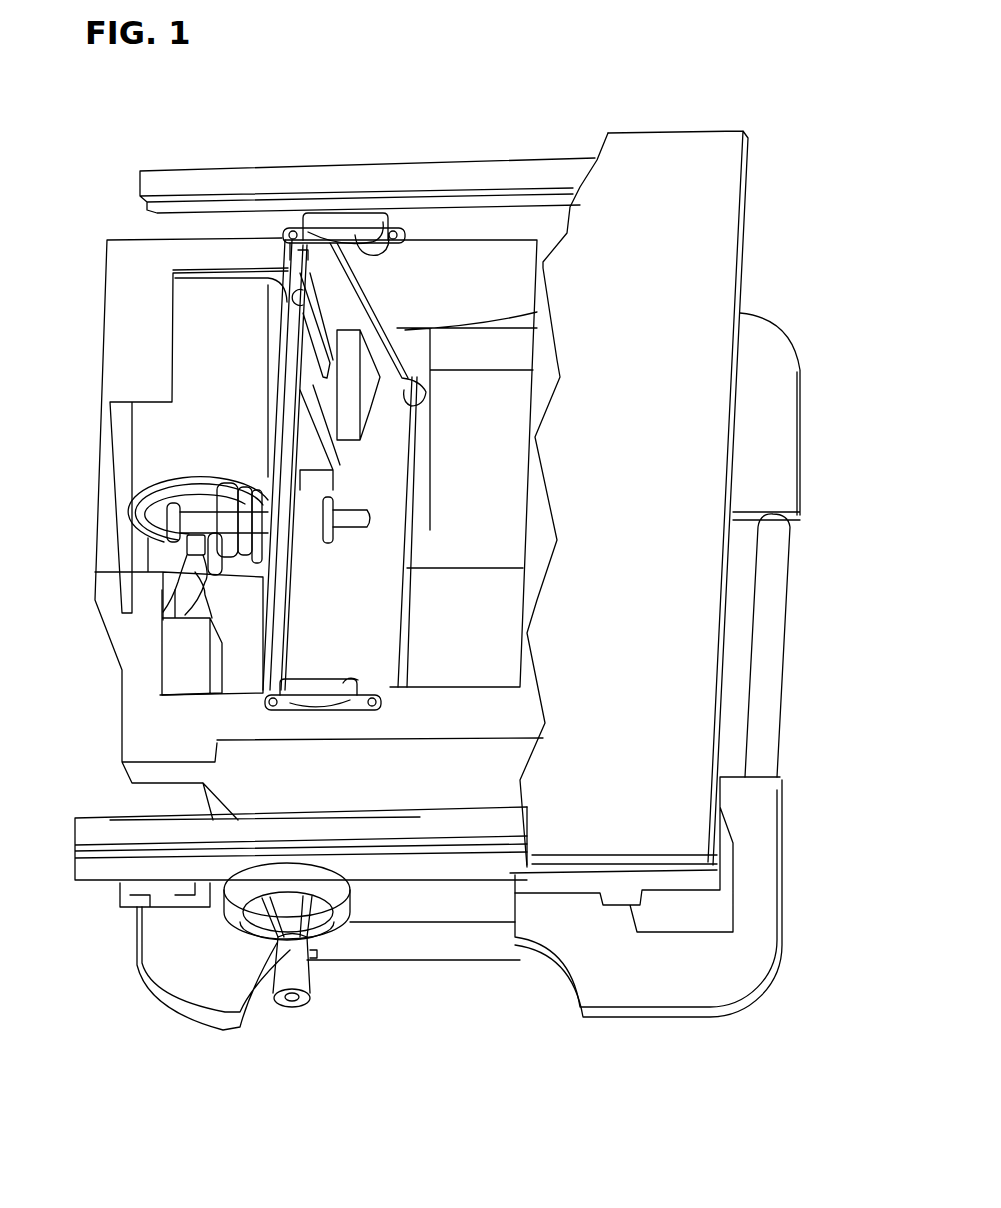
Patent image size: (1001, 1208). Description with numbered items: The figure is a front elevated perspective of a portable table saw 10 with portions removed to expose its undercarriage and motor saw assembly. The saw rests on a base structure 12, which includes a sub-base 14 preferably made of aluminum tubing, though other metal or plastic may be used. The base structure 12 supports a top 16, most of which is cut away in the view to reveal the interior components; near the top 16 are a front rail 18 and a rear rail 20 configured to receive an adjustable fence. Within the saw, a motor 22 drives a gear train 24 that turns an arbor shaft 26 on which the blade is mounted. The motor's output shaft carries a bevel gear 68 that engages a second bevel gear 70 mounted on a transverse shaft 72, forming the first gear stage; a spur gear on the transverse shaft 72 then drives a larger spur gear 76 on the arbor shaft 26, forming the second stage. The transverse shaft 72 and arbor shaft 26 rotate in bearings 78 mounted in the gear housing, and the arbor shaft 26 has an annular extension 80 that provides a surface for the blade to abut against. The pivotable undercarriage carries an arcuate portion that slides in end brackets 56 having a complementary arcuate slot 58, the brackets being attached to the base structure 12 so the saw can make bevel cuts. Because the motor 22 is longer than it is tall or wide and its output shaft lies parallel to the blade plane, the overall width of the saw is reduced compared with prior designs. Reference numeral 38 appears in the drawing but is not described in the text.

The portable table saw 10 is at (63, 847).
The base structure 12 is at (417, 717).
The sub-base 14 is at (430, 950).
The top 16 is at (697, 193).
The front rail 18 is at (103, 887).
The rear rail 20 is at (222, 182).
The motor 22 is at (157, 430).
The gear train 24 is at (140, 542).
The arbor shaft 26 is at (353, 520).
The wheel 38 is at (293, 980).
The end brackets 56 is at (377, 225).
The arcuate slot 58 is at (353, 240).
The bevel gear 68 is at (200, 503).
The second bevel gear 70 is at (198, 620).
The transverse shaft 72 is at (205, 603).
The larger spur gear 76 is at (225, 487).
The bearings 78 is at (163, 580).
The annular extension 80 is at (323, 510).